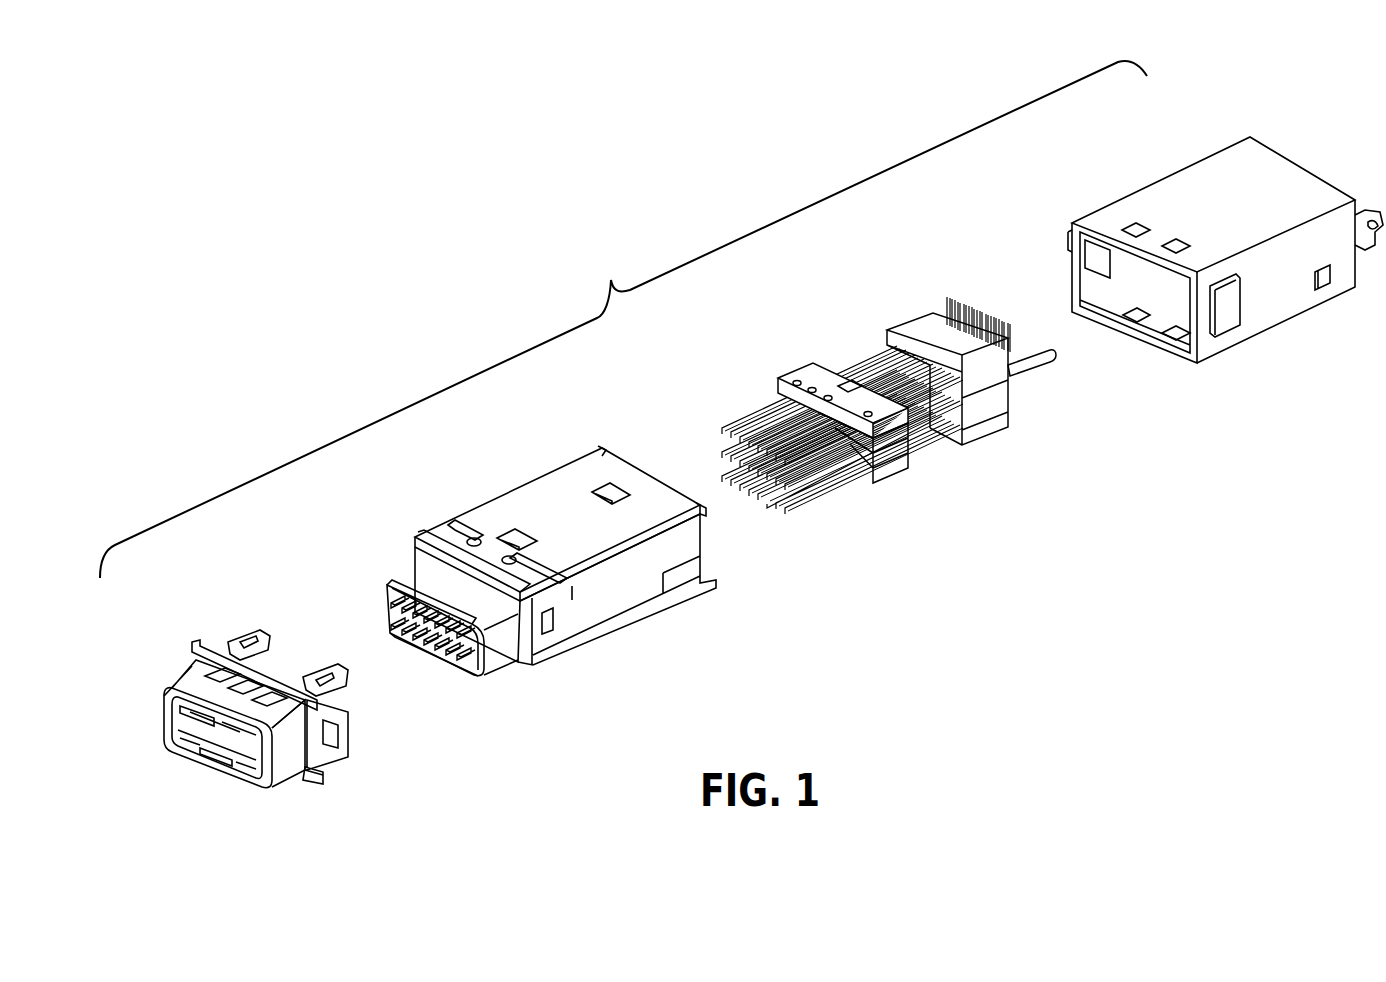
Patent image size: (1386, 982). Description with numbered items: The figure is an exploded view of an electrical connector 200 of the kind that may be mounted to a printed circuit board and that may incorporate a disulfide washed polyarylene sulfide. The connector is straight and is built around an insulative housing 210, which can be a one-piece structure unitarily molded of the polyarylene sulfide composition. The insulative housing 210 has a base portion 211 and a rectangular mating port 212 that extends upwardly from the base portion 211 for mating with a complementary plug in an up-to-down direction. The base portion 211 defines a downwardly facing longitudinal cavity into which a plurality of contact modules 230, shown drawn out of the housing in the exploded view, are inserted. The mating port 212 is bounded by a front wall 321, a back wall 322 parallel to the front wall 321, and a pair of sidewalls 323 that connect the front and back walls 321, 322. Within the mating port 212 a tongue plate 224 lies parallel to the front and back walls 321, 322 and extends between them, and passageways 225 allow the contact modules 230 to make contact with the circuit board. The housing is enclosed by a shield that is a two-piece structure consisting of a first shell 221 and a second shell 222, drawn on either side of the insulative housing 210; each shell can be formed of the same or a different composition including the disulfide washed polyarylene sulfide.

The electrical connector 200 is at (623, 319).
The insulative housing 210 is at (503, 580).
The base portion 211 is at (620, 598).
The mating port 212 is at (447, 580).
The first shell 221 is at (186, 628).
The second shell 222 is at (1158, 152).
The tongue plate 224 is at (403, 604).
The passageways 225 is at (440, 660).
The contact modules 230 is at (824, 321).
The front wall 321 is at (384, 635).
The back wall 322 is at (468, 675).
The sidewalls 323 is at (502, 645).